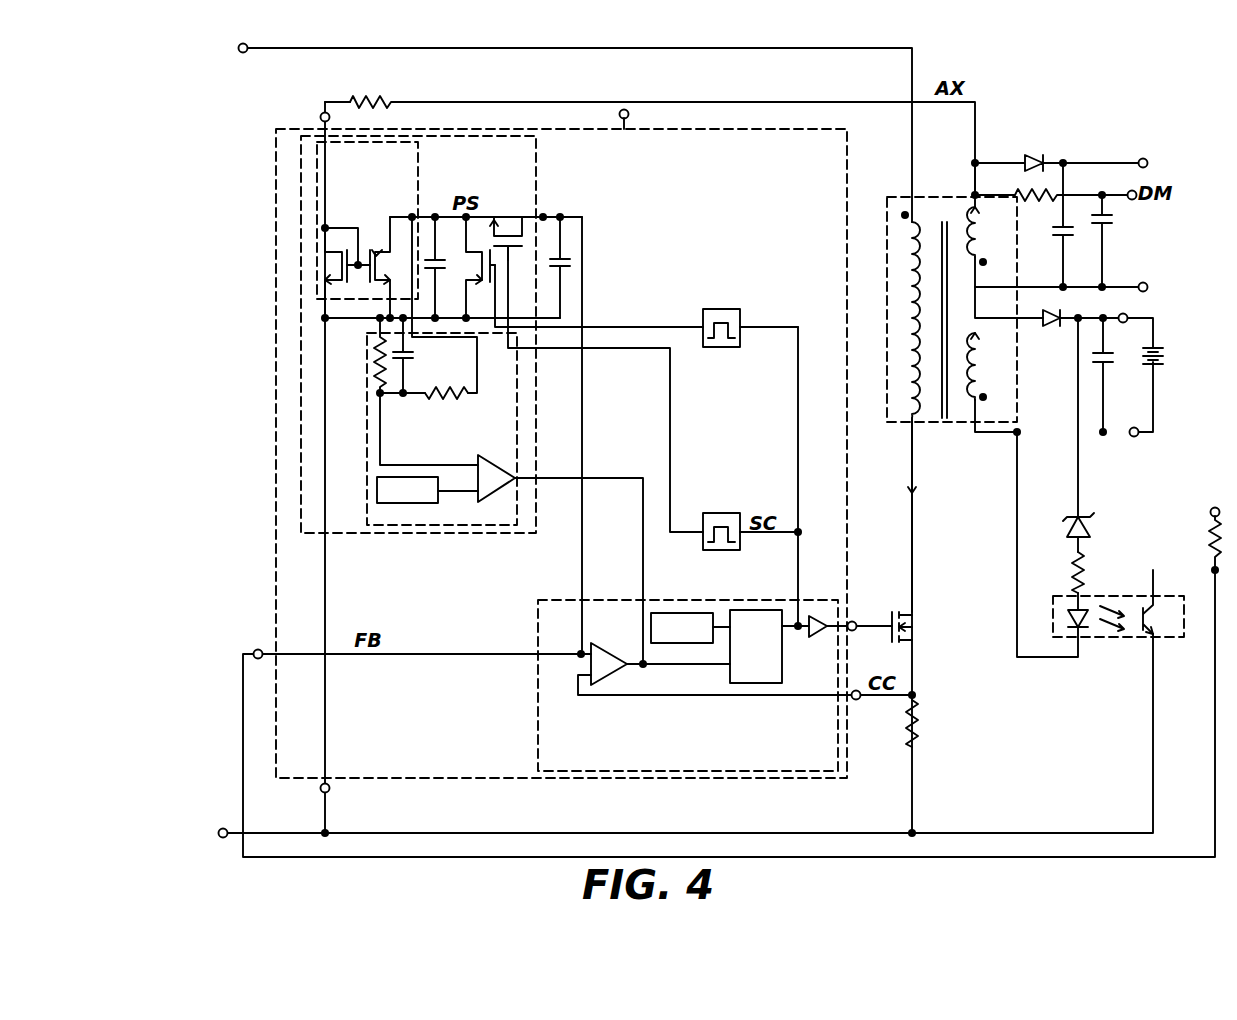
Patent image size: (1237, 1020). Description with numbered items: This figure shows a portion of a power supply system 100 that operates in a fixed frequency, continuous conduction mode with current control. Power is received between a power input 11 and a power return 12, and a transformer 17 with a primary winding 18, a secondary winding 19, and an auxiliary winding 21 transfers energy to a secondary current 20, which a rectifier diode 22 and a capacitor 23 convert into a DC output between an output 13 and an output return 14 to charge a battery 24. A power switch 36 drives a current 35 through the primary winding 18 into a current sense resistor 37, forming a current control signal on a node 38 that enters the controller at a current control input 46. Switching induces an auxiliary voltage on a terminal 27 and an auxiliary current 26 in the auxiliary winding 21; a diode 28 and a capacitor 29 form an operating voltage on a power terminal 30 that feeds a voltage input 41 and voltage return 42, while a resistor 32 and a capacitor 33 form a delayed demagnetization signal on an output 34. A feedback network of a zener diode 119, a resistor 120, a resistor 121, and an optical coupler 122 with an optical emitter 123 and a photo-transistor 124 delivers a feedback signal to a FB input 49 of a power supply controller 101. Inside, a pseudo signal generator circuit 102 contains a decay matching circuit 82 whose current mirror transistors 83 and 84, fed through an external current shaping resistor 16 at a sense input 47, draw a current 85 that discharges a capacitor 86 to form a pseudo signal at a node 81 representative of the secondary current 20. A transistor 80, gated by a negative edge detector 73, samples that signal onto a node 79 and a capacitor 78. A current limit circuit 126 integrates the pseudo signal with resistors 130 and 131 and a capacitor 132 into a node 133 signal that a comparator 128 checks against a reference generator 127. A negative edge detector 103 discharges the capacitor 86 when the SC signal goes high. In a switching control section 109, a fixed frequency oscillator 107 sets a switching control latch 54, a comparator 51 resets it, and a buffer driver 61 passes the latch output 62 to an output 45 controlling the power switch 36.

The power supply system 100 is at (780, 877).
The power input 11 is at (240, 50).
The external current shaping resistor 16 is at (383, 100).
The sense input 47 is at (320, 116).
The voltage input 41 is at (628, 112).
The power supply controller 101 is at (473, 780).
The pseudo signal generator circuit 102 is at (445, 533).
The decay matching circuit 82 is at (420, 173).
The current limit circuit 126 is at (518, 441).
The switching control section 109 is at (537, 712).
The transistor 83 is at (335, 263).
The transistor 84 is at (380, 282).
The current 85 is at (377, 248).
The node 81 is at (437, 214).
The capacitor 86 is at (436, 264).
The transistor 80 is at (495, 230).
The node 79 is at (545, 215).
The capacitor 78 is at (565, 263).
The negative edge detector 103 is at (720, 309).
The negative edge detector 73 is at (740, 514).
The resistor 130 is at (378, 350).
The capacitor 132 is at (410, 355).
The resistor 131 is at (452, 392).
The node 133 is at (404, 396).
The comparator 128 is at (495, 468).
The reference generator 127 is at (440, 500).
The fixed frequency oscillator 107 is at (680, 612).
The comparator 51 is at (605, 648).
The switching control latch 54 is at (783, 680).
The output node 62 is at (800, 622).
The buffer driver 61 is at (820, 640).
The output 45 is at (855, 622).
The power switch 36 is at (905, 628).
The node 38 is at (916, 693).
The current control input 46 is at (858, 700).
The current sense resistor 37 is at (917, 728).
The current 35 is at (913, 492).
The primary winding 18 is at (910, 373).
The transformer 17 is at (958, 428).
The auxiliary current 26 is at (978, 215).
The auxiliary winding 21 is at (984, 265).
The secondary current 20 is at (976, 340).
The secondary winding 19 is at (987, 398).
The terminal 27 is at (972, 194).
The diode 28 is at (1036, 158).
The power terminal 30 is at (1147, 160).
The resistor 32 is at (1048, 200).
The output 34 is at (1135, 198).
The capacitor 29 is at (1065, 240).
The capacitor 33 is at (1105, 228).
The power return 12 is at (1147, 286).
The output 13 is at (1127, 314).
The rectifier diode 22 is at (1050, 325).
The capacitor 23 is at (1105, 360).
The battery 24 is at (1157, 345).
The output return 14 is at (1135, 428).
The zener diode 119 is at (1088, 522).
The resistor 120 is at (1082, 568).
The optical emitter 123 is at (1067, 620).
The optical coupler 122 is at (1110, 640).
The photo-transistor 124 is at (1150, 622).
The resistor 121 is at (1210, 540).
The FB input 49 is at (258, 650).
The voltage return 42 is at (330, 790).